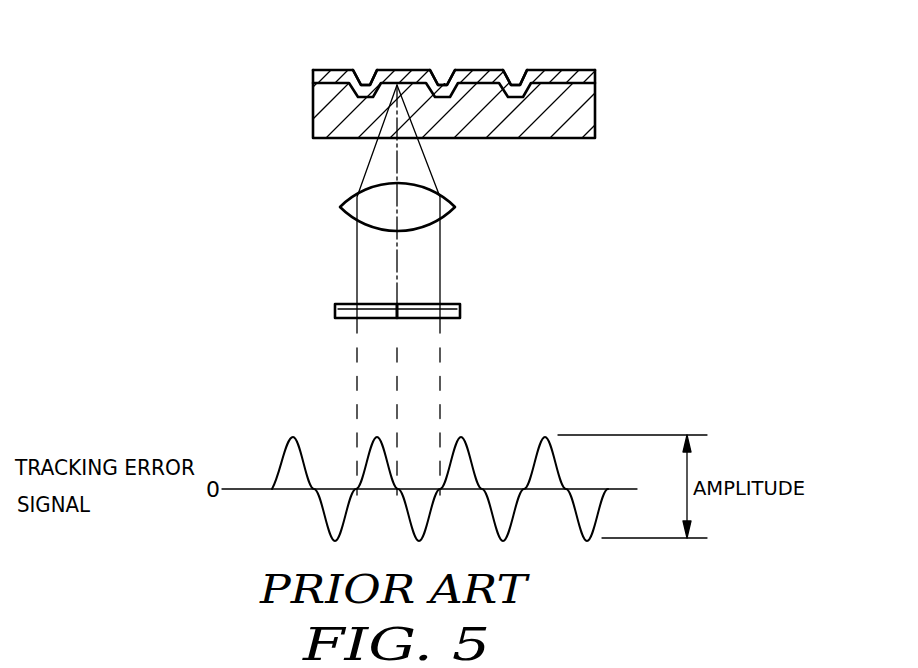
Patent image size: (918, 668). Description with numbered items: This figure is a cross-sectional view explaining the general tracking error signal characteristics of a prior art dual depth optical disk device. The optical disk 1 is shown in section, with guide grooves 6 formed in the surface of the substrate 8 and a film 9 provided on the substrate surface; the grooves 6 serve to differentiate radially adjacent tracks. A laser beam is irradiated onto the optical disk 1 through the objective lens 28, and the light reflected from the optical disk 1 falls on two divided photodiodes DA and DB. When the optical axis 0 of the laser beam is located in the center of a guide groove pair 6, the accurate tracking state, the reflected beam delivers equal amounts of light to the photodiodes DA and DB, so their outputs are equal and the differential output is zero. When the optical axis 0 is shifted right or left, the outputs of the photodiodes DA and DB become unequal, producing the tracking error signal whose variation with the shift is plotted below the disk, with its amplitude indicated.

The optical disk 1 is at (473, 95).
The grooves 6 is at (362, 70).
The substrate 8 is at (552, 122).
The film 9 is at (338, 70).
The objective lens 28 is at (445, 202).
The optical axis 0 is at (397, 287).
The divided photodiode DA is at (347, 313).
The divided photodiode DB is at (453, 308).